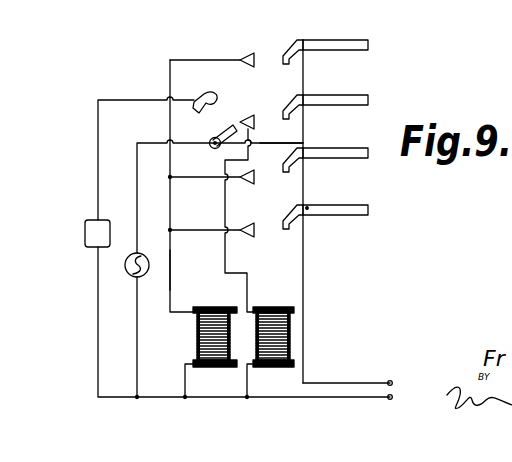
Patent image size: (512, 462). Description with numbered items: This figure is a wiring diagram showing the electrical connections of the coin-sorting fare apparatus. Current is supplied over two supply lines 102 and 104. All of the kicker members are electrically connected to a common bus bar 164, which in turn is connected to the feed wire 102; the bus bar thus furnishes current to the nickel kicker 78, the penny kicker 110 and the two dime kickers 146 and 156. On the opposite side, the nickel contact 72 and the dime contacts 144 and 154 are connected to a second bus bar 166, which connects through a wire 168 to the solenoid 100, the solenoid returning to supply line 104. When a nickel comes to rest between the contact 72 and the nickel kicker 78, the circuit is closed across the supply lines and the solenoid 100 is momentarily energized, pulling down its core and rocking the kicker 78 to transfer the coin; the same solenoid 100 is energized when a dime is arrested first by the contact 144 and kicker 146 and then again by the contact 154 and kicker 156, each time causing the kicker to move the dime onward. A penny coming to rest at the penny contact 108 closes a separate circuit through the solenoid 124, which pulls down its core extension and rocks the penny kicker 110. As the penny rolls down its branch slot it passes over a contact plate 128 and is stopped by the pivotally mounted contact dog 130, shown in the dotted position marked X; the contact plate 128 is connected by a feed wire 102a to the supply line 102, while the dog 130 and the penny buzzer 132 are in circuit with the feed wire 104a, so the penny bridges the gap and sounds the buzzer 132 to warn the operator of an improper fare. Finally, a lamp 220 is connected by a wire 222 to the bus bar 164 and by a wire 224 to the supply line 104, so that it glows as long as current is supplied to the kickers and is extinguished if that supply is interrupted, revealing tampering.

The nickel contact 72 is at (252, 58).
The nickel kicker 78 is at (334, 42).
The solenoid 100 is at (197, 342).
The current supply line 102 is at (355, 383).
The feed wire 102a is at (285, 143).
The current supply line 104 is at (348, 398).
The feed wire 104a is at (97, 180).
The penny contact 108 is at (248, 113).
The penny kicker 110 is at (290, 108).
The solenoid 124 is at (290, 331).
The contact plate 128 is at (222, 147).
The contact dog 130 is at (202, 106).
The penny buzzer 132 is at (88, 243).
The dime contact 144 is at (251, 182).
The dime kicker 146 is at (284, 172).
The dime contact 154 is at (252, 238).
The dime kicker 156 is at (289, 223).
The bus bar 164 is at (305, 180).
The bus bar 166 is at (170, 205).
The wire 168 is at (170, 265).
The lamp 220 is at (126, 272).
The wire 222 is at (135, 149).
The wire 224 is at (136, 368).